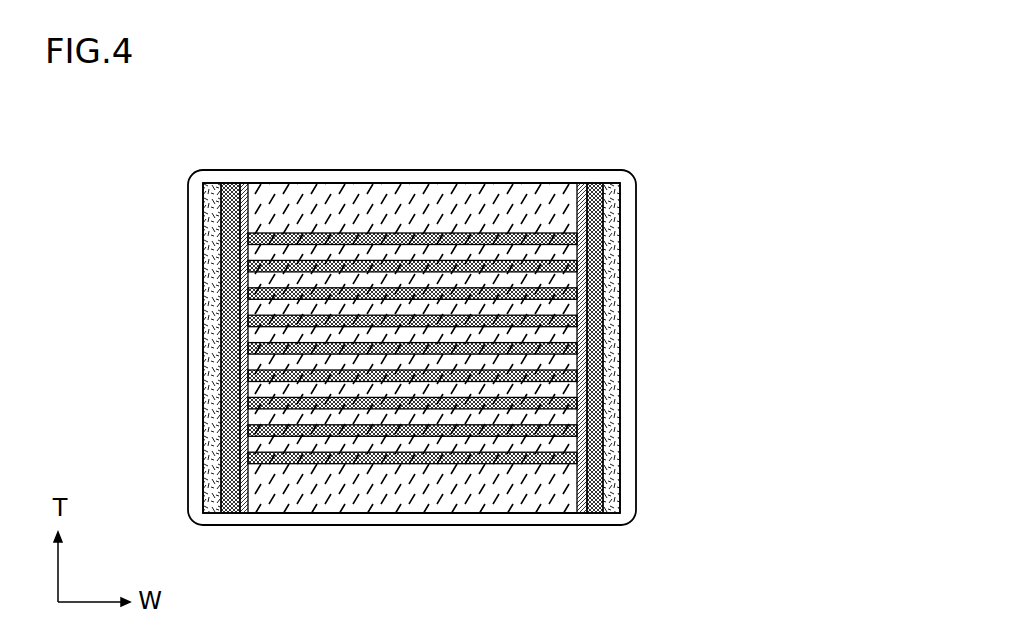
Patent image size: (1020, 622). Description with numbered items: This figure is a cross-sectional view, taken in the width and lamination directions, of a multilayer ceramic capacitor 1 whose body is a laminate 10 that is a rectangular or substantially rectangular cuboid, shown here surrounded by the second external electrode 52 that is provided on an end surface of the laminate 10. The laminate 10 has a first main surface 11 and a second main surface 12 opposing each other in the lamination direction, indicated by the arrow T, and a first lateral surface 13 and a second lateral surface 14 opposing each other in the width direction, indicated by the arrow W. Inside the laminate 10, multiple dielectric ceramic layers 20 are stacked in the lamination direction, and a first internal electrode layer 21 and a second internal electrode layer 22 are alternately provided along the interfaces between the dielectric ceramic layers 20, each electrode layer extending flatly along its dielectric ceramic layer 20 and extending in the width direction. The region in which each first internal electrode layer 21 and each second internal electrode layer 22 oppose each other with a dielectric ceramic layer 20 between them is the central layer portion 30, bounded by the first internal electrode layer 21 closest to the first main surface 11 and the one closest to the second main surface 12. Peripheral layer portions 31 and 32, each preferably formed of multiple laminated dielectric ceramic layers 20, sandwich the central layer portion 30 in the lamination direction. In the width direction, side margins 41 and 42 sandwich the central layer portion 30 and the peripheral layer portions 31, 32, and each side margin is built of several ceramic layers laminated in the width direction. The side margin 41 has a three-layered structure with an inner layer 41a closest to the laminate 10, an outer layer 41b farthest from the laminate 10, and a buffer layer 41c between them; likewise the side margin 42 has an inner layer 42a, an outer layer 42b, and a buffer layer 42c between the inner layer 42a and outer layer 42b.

The multilayer ceramic capacitor 1 is at (173, 144).
The laminate 10 is at (537, 178).
The first main surface 11 is at (313, 182).
The second main surface 12 is at (513, 513).
The first lateral surface 13 is at (210, 400).
The second lateral surface 14 is at (610, 402).
The dielectric ceramic layer 20 is at (410, 392).
The first internal electrode layer 21 is at (420, 343).
The second internal electrode layer 22 is at (475, 318).
The central layer portion 30 is at (790, 234).
The peripheral layer portion 31 is at (620, 184).
The peripheral layer portion 32 is at (620, 462).
The side margin 41 is at (90, 218).
The inner layer 41a is at (243, 250).
The outer layer 41b is at (212, 312).
The buffer layer 41c is at (228, 283).
The side margin 42 is at (738, 263).
The inner layer 42a is at (582, 300).
The outer layer 42b is at (612, 358).
The buffer layer 42c is at (593, 332).
The second external electrode 52 is at (245, 178).